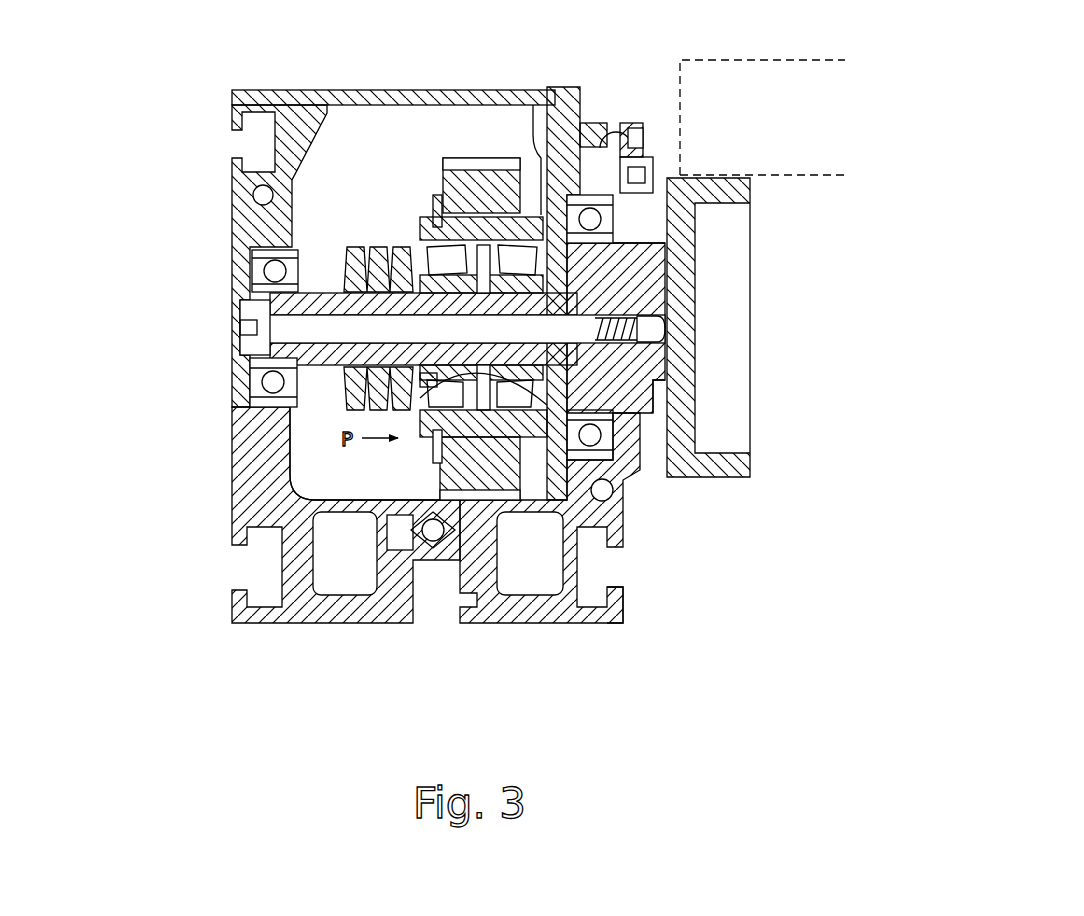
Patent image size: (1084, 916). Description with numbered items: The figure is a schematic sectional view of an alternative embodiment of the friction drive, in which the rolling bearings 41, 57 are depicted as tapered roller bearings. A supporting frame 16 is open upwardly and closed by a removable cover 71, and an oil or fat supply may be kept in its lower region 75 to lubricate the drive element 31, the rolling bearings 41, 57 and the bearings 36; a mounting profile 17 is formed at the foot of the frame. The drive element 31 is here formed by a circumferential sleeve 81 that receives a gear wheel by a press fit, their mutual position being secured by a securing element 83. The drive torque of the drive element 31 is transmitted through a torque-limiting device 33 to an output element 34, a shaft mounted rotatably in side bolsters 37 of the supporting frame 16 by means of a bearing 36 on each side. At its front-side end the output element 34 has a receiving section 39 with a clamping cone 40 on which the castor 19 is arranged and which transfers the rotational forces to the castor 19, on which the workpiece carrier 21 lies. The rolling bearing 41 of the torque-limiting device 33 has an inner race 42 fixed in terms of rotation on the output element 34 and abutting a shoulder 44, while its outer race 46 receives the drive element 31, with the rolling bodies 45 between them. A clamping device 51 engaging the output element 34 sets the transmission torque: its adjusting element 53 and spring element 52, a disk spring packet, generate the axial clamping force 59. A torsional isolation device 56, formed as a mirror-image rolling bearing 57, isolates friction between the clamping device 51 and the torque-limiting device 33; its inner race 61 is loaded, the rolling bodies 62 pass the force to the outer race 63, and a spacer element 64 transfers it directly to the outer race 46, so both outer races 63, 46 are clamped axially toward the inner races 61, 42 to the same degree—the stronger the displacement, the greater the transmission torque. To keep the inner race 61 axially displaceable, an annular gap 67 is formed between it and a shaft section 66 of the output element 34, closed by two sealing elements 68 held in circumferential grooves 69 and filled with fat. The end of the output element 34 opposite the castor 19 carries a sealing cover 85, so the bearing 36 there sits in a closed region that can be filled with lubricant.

The supporting frame 16 is at (618, 643).
The mounting groove 17 is at (630, 605).
The castor 19 is at (722, 178).
The workpiece carrier 21 is at (738, 85).
The drive element 31 is at (485, 175).
The torque-limiting device 33 is at (408, 462).
The output element 34 is at (210, 325).
The bearing 36 is at (254, 264).
The side bolster 37 is at (262, 452).
The receiving section 39 is at (662, 398).
The clamping cone 40 is at (628, 357).
The rolling bearing 41 is at (540, 150).
The inner race 42 is at (622, 276).
The shoulder 44 is at (578, 215).
The rolling body 45 is at (543, 430).
The outer race 46 is at (505, 455).
The clamping device 51 is at (322, 230).
The spring element 52 is at (405, 258).
The adjusting element 53 is at (315, 252).
The torsional isolation device 56 is at (427, 178).
The rolling bearing 57 is at (458, 226).
The axial clamping force 59 is at (363, 442).
The inner race 61 is at (432, 420).
The rolling body 62 is at (450, 378).
The outer race 63 is at (478, 408).
The spacer element 64 is at (517, 405).
The shaft section 66 is at (347, 345).
The annular gap 67 is at (340, 394).
The sealing element 68 is at (446, 386).
The circumferential groove 69 is at (607, 452).
The cover 71 is at (300, 100).
The lower region 75 is at (383, 491).
The sleeve 81 is at (517, 226).
The securing element 83 is at (428, 220).
The sealing cover 85 is at (238, 358).